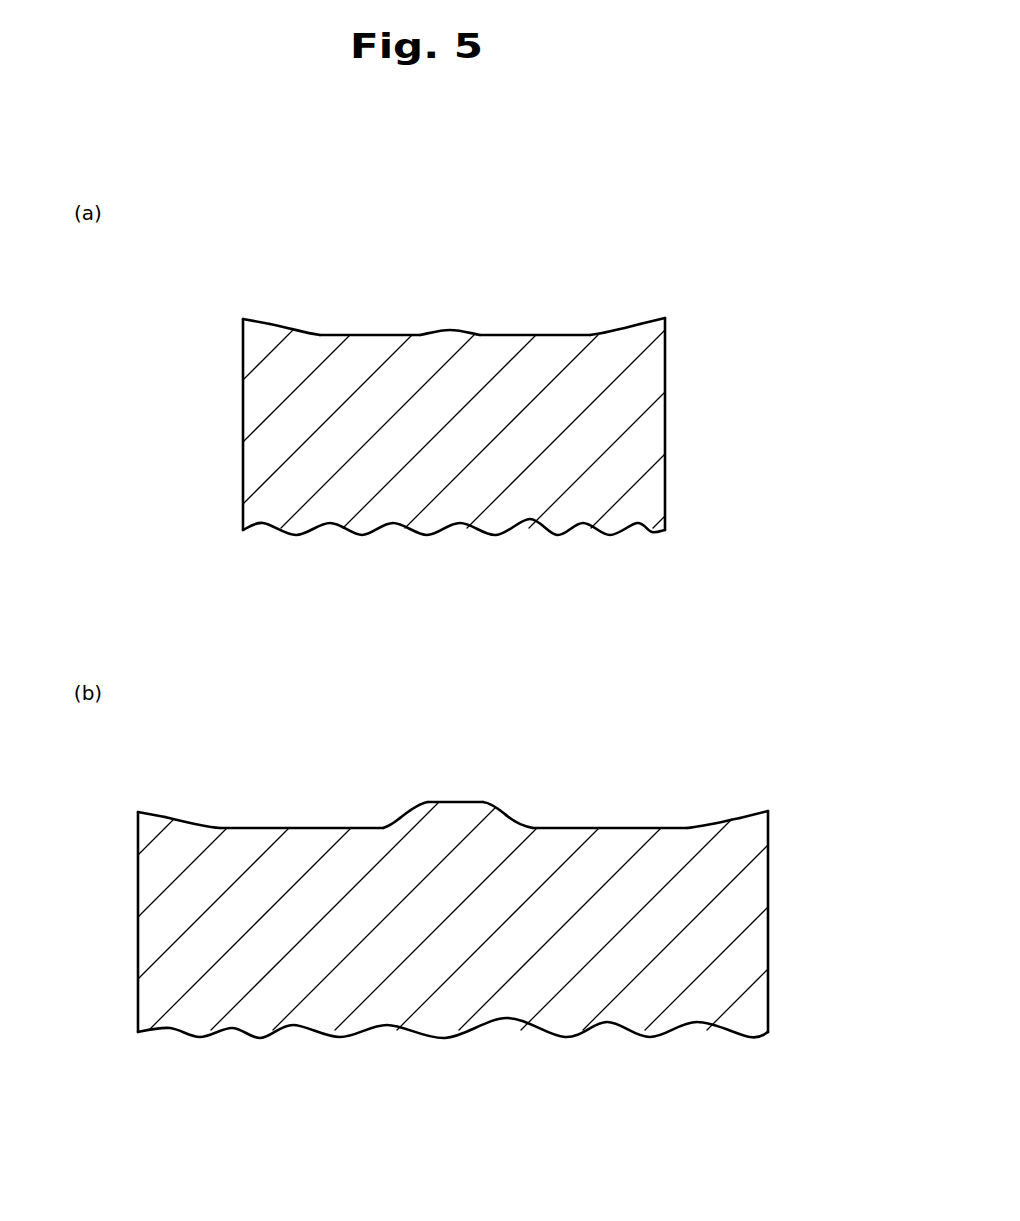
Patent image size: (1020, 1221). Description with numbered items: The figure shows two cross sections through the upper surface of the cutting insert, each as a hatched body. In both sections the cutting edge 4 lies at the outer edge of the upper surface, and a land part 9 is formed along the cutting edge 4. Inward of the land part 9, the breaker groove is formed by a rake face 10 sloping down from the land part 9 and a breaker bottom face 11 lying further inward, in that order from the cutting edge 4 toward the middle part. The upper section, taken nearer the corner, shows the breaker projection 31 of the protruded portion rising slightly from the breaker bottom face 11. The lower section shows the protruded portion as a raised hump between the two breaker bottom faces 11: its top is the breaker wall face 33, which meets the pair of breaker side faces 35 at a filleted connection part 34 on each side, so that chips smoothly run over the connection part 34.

The cutting edge 4 is at (243, 318).
The land part 9 is at (252, 318).
The rake face 10 is at (302, 328).
The breaker bottom face 11 is at (375, 333).
The breaker projection 31 is at (452, 330).
The breaker wall face 33 is at (454, 802).
The connection part 34 is at (427, 802).
The breaker side faces 35 is at (400, 818).